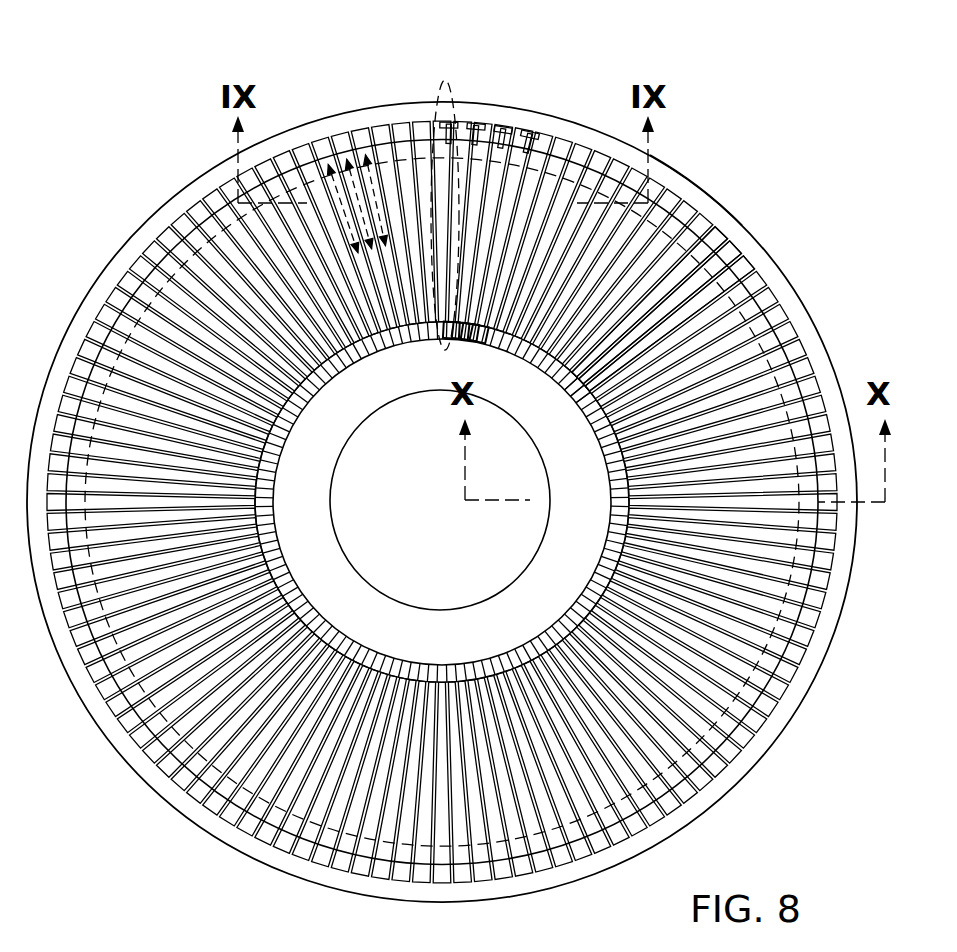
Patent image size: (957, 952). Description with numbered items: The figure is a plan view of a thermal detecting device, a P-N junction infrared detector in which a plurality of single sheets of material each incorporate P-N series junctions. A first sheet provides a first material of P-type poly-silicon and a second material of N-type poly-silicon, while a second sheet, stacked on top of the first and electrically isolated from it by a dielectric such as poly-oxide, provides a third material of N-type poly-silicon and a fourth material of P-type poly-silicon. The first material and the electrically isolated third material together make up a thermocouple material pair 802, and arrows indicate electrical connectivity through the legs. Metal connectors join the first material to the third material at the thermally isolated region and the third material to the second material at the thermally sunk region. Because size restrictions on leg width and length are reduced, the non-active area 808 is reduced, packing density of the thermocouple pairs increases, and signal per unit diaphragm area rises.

The thermocouple material pair 802 is at (452, 82).
The non-active area 808 is at (368, 618).